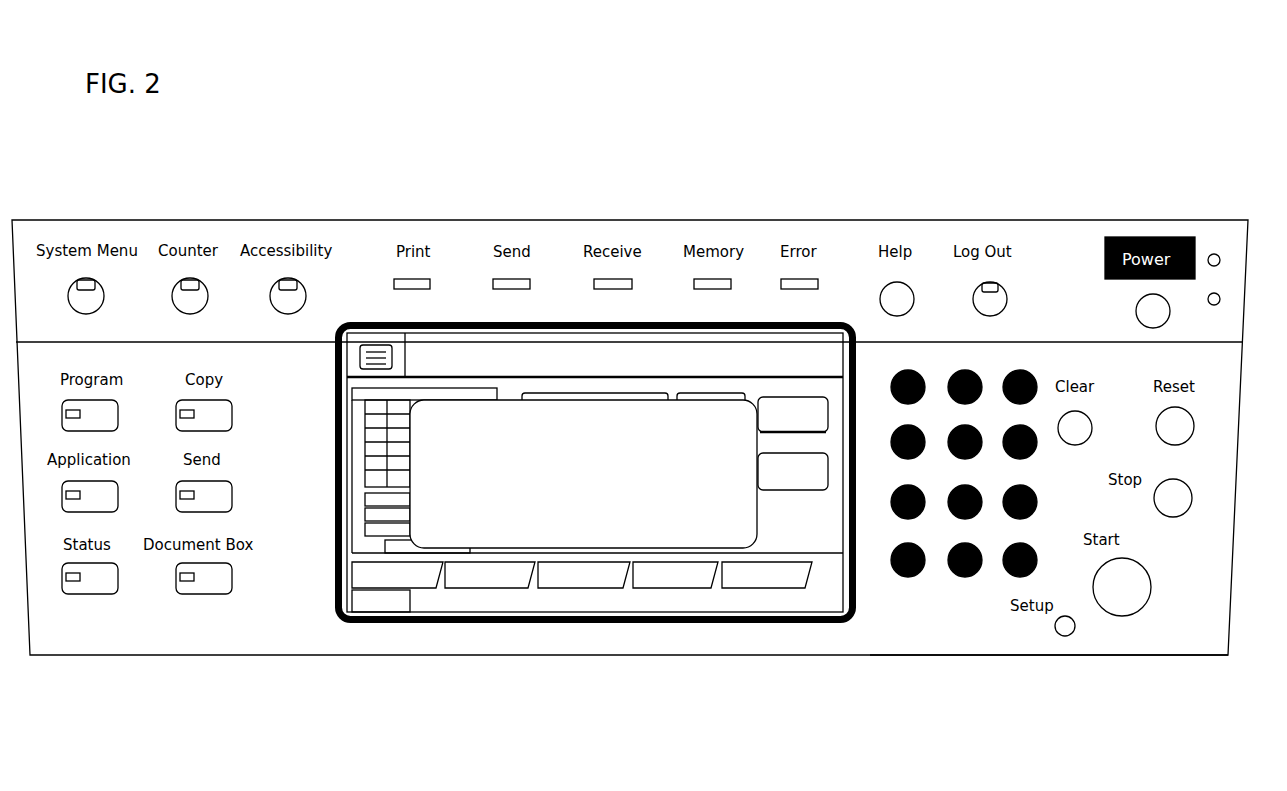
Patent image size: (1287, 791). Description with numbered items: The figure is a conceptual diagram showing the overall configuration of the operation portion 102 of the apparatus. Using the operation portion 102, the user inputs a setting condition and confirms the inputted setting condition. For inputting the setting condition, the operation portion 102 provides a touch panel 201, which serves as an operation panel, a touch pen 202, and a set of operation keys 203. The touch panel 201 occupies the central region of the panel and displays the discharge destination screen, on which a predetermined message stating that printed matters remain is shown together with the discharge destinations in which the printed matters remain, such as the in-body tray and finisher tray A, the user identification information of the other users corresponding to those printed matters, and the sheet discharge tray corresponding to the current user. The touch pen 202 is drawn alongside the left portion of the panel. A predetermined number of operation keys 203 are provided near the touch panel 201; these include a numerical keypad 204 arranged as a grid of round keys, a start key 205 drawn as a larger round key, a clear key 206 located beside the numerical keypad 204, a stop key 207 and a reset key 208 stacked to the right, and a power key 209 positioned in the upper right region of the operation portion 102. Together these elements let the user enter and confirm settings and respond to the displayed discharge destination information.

The operation portion 102 is at (640, 668).
The touch panel 201 is at (438, 645).
The touch pen 202 is at (266, 355).
The operation keys 203 is at (866, 682).
The numerical keypad 204 is at (956, 604).
The start key 205 is at (1122, 596).
The clear key 206 is at (1068, 440).
The stop key 207 is at (1173, 510).
The reset key 208 is at (1177, 437).
The power key 209 is at (1162, 320).